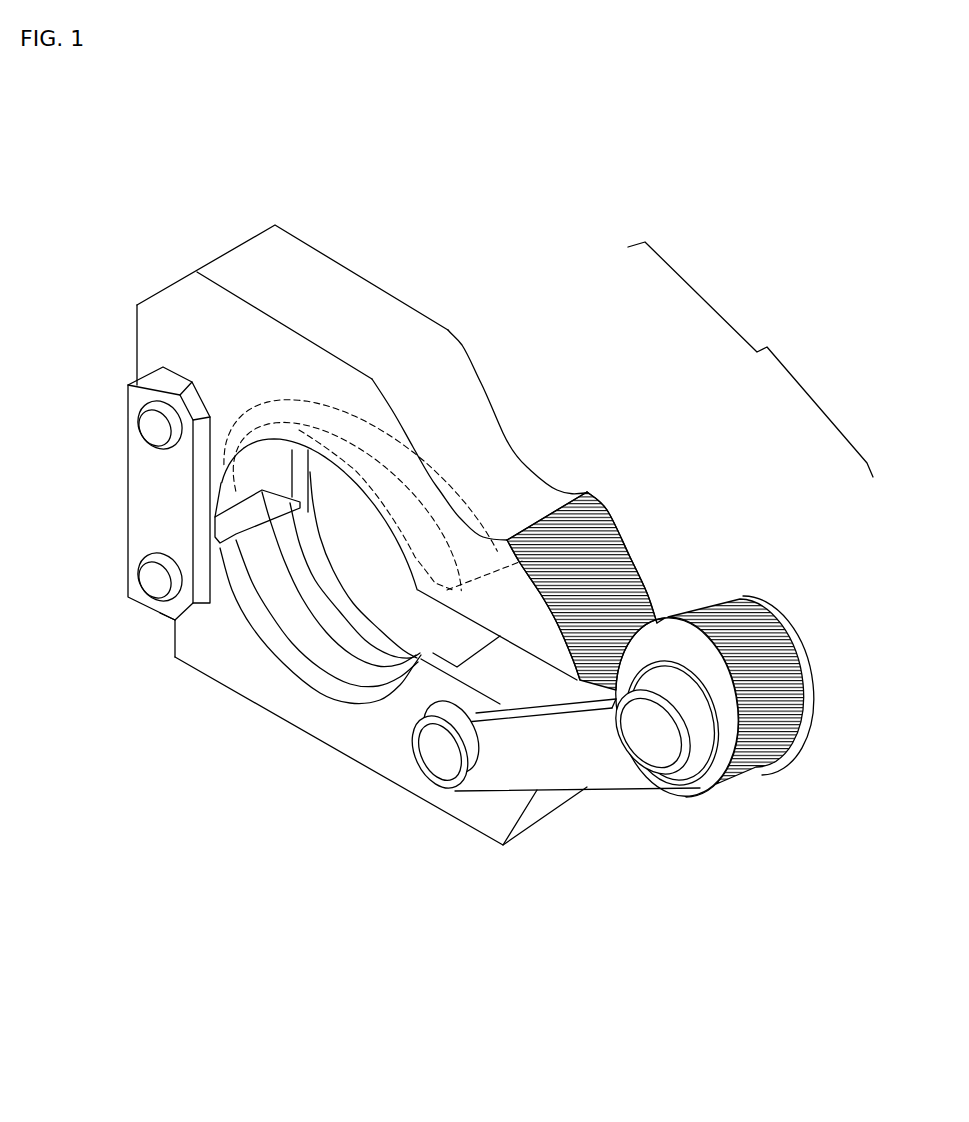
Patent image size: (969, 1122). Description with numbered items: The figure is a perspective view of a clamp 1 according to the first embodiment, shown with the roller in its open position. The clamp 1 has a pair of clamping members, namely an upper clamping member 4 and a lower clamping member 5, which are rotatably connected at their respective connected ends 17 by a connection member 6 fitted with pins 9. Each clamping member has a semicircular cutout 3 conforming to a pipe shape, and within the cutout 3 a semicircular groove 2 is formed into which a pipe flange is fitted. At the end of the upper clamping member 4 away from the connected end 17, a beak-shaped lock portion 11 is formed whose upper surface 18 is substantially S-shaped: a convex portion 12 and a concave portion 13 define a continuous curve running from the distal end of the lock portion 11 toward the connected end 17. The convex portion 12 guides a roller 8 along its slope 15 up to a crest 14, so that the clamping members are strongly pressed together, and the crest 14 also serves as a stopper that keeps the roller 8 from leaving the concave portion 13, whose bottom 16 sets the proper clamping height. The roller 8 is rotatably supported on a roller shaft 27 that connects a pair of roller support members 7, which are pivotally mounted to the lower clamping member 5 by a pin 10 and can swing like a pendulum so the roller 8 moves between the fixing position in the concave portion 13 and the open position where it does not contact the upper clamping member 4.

The clamp 1 is at (457, 563).
The semicircular groove 2 is at (357, 490).
The cutout 3 is at (372, 528).
The upper clamping member 4 is at (333, 397).
The lower clamping member 5 is at (377, 752).
The connection member 6 is at (127, 493).
The roller support member 7 is at (659, 744).
The roller 8 is at (720, 752).
The pin 9 is at (116, 501).
The pin 10 is at (435, 796).
The lock portion 11 is at (750, 359).
The convex portion 12 is at (680, 526).
The concave portion 13 is at (589, 435).
The crest 14 is at (603, 542).
The slope 15 is at (664, 594).
The bottom of concave portion 16 is at (491, 408).
The connected end 17 is at (117, 486).
The upper surface 18 is at (292, 225).
The roller shaft 27 is at (665, 791).